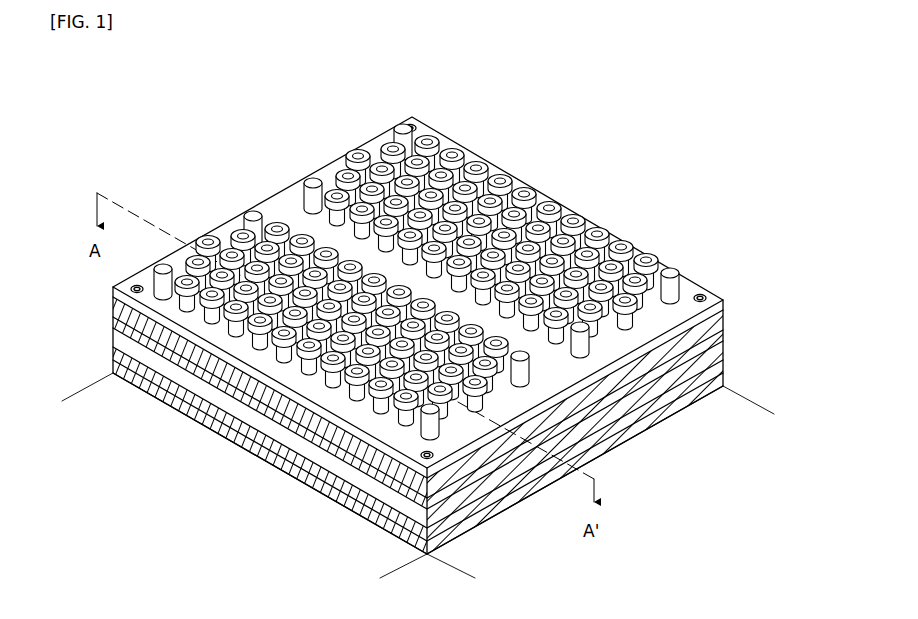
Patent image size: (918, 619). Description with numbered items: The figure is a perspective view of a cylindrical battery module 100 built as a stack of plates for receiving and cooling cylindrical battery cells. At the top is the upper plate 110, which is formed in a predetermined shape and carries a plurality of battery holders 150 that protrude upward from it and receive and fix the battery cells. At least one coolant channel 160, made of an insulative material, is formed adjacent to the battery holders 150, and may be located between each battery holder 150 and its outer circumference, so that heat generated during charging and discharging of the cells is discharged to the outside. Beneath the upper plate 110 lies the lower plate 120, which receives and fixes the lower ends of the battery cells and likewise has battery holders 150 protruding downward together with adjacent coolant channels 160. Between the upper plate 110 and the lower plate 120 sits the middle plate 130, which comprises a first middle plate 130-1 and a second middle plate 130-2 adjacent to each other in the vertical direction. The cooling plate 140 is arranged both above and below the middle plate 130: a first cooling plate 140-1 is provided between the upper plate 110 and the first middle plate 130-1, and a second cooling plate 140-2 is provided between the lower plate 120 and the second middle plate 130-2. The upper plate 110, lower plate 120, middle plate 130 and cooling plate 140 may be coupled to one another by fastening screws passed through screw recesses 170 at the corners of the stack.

The cylindrical battery module 100 is at (464, 320).
The upper plate 110 is at (727, 298).
The lower plate 120 is at (730, 378).
The middle plate 130 is at (490, 403).
The first middle plate 130-1 is at (730, 320).
The second middle plate 130-2 is at (730, 347).
The cooling plate 140 is at (418, 450).
The first cooling plate 140-1 is at (372, 512).
The second cooling plate 140-2 is at (392, 533).
The battery holder 150 is at (406, 279).
The coolant channel 160 is at (305, 185).
The screw recess 170 is at (113, 303).